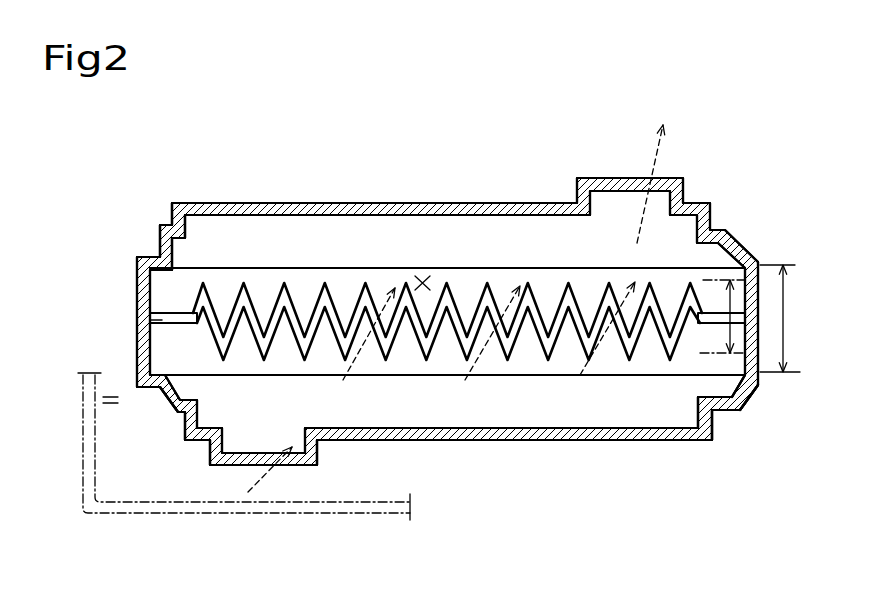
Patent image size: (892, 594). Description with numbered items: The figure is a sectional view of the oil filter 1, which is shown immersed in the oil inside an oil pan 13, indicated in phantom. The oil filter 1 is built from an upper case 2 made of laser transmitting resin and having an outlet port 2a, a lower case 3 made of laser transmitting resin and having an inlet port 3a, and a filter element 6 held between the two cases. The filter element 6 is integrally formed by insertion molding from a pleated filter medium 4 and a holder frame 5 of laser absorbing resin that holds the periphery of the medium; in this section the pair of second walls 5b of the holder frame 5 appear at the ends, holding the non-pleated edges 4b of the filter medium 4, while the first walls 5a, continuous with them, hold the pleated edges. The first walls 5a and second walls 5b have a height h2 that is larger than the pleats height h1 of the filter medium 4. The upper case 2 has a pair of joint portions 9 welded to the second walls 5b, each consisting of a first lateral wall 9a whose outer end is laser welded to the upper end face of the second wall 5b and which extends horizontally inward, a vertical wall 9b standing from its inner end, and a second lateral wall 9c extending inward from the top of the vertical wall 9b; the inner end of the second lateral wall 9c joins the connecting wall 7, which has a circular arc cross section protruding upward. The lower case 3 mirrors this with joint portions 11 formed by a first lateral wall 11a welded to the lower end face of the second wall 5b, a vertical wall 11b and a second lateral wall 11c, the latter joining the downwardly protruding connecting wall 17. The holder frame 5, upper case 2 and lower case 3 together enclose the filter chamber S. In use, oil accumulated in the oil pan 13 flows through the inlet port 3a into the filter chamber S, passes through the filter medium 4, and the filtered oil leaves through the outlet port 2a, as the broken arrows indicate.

The oil filter 1 is at (700, 110).
The upper case 2 is at (728, 150).
The outlet port 2a is at (597, 178).
The lower case 3 is at (522, 447).
The inlet port 3a is at (224, 455).
The filter medium 4 is at (222, 280).
The non-pleated edges 4b is at (150, 320).
The holder frame 5 is at (137, 277).
The first walls 5a is at (286, 270).
The second walls 5b is at (137, 325).
The filter element 6 is at (348, 282).
The connecting wall 7 is at (480, 203).
The joint portions 9 is at (157, 110).
The first lateral wall 9a is at (140, 257).
The vertical wall 9b is at (162, 242).
The second lateral wall 9c is at (175, 225).
The joint portions 11 is at (185, 422).
The first lateral wall 11a is at (752, 388).
The vertical wall 11b is at (733, 407).
The second lateral wall 11c is at (715, 432).
The oil pan 13 is at (123, 515).
The connecting wall 17 is at (472, 443).
The filter chamber S is at (425, 283).
The pleats height h1 is at (728, 278).
The height h2 is at (787, 290).